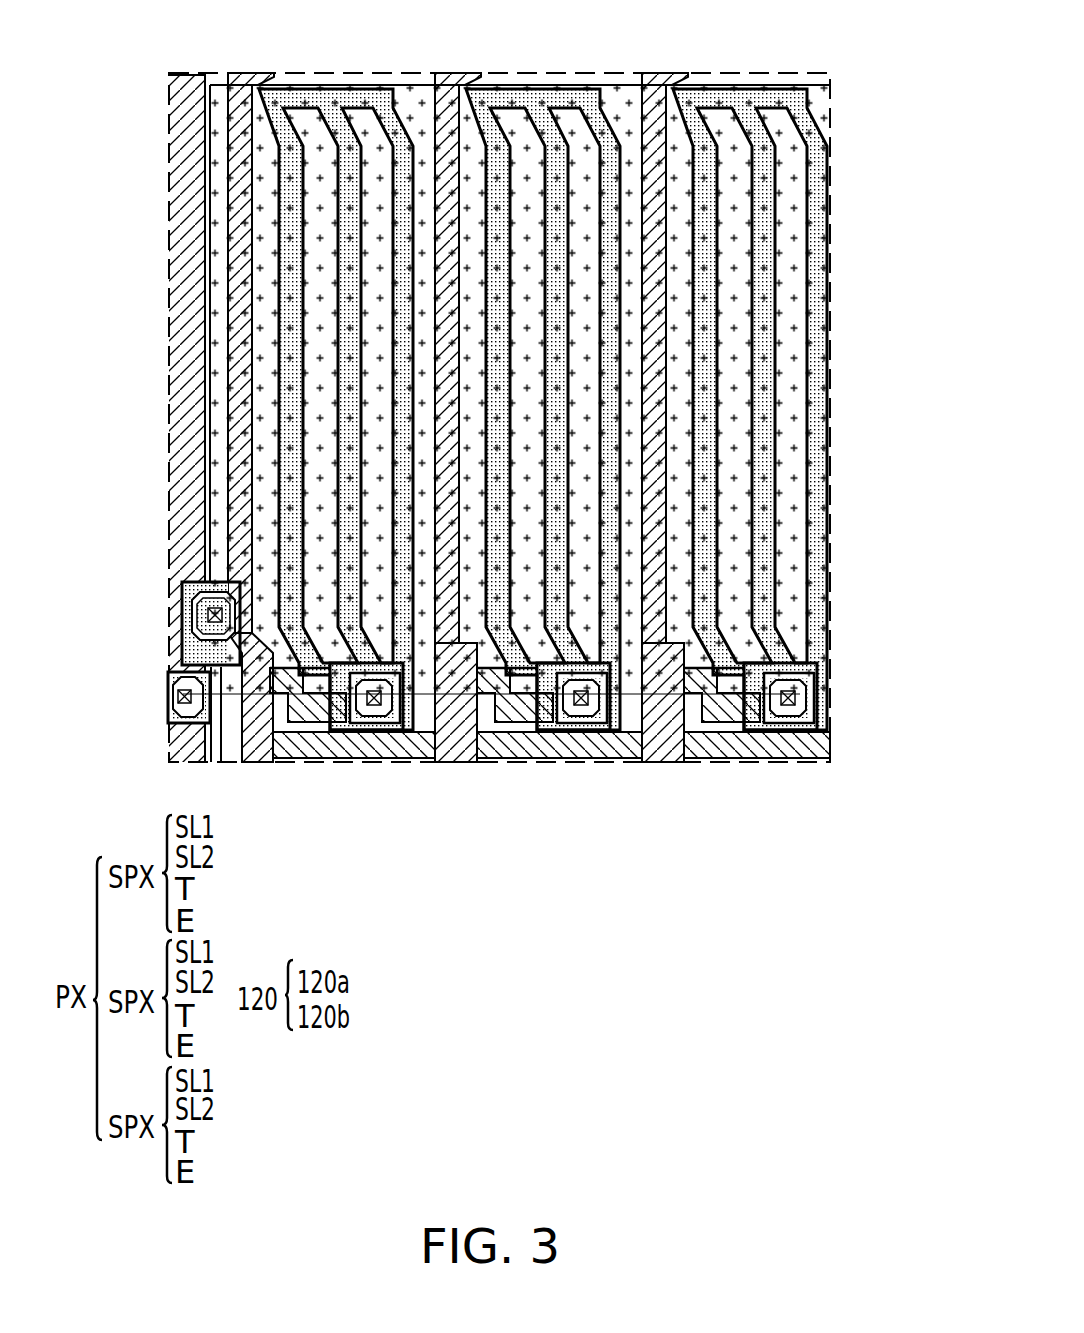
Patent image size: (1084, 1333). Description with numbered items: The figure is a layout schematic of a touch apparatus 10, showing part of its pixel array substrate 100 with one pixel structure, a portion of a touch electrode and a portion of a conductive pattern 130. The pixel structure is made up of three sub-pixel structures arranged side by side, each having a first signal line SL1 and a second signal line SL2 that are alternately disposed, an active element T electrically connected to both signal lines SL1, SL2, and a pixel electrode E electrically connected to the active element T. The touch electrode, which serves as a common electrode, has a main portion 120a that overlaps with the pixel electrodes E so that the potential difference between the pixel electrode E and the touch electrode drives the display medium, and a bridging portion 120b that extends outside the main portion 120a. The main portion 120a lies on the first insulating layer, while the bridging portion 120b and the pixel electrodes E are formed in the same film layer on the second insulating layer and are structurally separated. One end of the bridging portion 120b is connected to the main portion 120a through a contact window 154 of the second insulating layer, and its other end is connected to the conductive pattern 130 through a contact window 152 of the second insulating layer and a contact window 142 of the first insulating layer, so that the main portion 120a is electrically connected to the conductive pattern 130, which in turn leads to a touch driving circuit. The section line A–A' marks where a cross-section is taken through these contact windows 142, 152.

The pixel array substrate 100 is at (940, 840).
The touch apparatus 10 is at (499, 417).
The conductive pattern 130 is at (187, 73).
The first signal line SL1 is at (246, 73).
The second signal line SL2 is at (820, 741).
The main portion 120a is at (570, 85).
The bridging portion 120b is at (217, 580).
The pixel electrode E is at (826, 120).
The active element T is at (745, 656).
The contact window 154 is at (210, 612).
The contact window 142 is at (180, 696).
The contact window 152 is at (132, 699).
The section line start A is at (476, 726).
The section line end A' is at (428, 652).